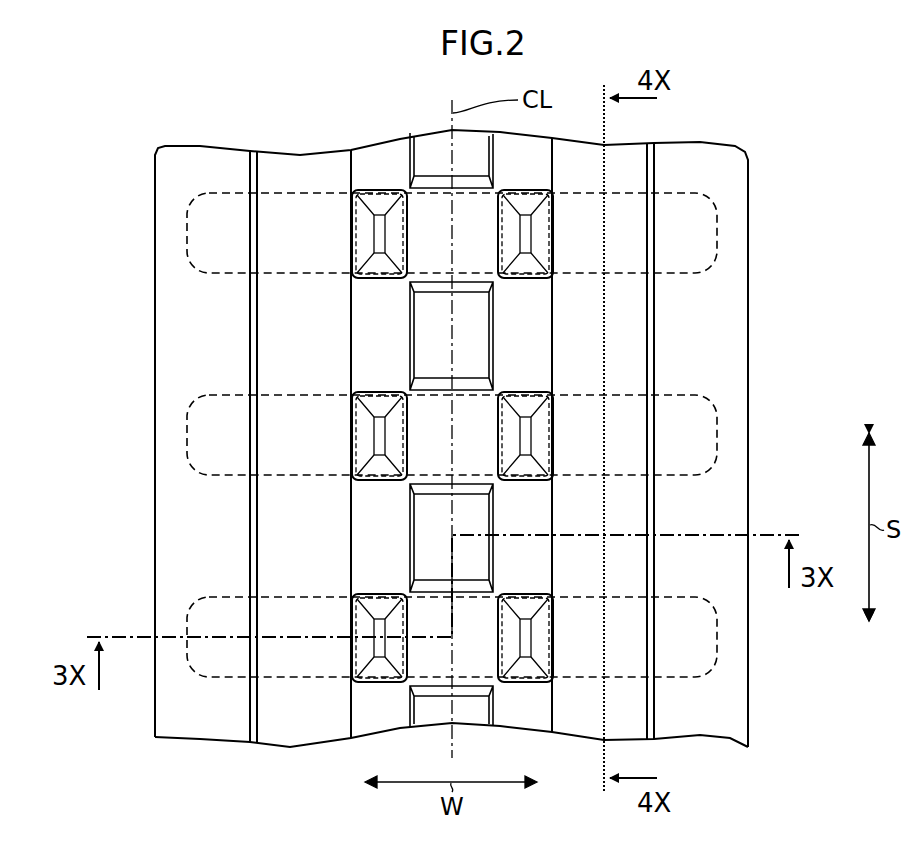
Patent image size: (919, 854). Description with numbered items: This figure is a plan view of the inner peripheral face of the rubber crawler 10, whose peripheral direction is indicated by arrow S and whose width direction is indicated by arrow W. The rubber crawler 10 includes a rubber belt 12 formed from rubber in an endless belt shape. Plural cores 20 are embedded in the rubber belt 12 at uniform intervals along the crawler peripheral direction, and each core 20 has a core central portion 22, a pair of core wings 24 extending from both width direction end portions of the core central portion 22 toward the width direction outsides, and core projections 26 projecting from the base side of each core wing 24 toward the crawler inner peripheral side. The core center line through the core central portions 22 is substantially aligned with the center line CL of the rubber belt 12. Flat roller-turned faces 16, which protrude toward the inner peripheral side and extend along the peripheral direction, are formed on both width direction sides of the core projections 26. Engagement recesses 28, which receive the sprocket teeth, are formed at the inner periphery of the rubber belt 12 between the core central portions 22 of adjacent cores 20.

The rubber crawler 10 is at (120, 182).
The rubber belt 12 is at (748, 225).
The roller-turned face 16 is at (298, 722).
The core 20 is at (700, 283).
The core central portion 22 is at (478, 393).
The core wing 24 is at (210, 395).
The core projection 26 is at (408, 255).
The engagement recess 28 is at (470, 158).